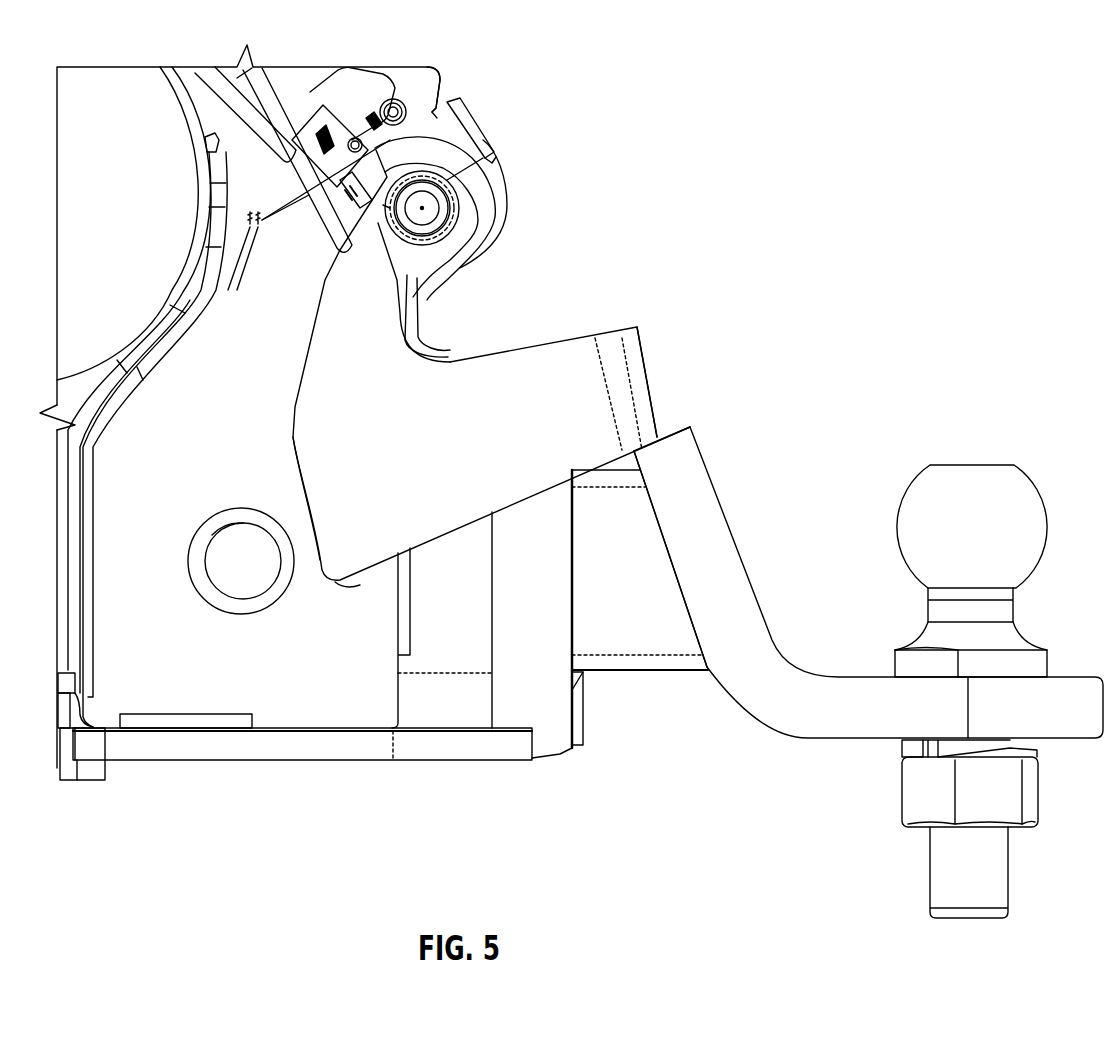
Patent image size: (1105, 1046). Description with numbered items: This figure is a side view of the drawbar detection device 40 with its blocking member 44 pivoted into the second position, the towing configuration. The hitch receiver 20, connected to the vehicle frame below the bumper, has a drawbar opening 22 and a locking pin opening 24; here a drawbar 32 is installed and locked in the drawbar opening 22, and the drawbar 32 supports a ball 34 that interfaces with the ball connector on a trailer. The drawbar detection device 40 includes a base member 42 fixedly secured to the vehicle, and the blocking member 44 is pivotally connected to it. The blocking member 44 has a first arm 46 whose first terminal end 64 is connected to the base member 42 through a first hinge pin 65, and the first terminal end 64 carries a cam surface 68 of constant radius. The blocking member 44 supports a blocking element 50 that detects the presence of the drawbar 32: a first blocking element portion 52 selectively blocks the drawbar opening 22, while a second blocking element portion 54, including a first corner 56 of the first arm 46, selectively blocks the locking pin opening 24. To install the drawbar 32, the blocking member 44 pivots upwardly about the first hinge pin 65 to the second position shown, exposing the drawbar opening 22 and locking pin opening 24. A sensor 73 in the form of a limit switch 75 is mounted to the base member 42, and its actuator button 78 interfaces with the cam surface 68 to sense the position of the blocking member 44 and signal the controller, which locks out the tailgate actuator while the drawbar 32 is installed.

The hitch receiver 20 is at (570, 760).
The drawbar opening 22 is at (574, 584).
The locking pin opening 24 is at (207, 557).
The drawbar 32 is at (733, 672).
The ball 34 is at (965, 490).
The drawbar detection device 40 is at (625, 296).
The base member 42 is at (472, 128).
The blocking member 44 is at (636, 338).
The first arm 46 is at (295, 404).
The blocking element 50 is at (656, 446).
The first blocking element portion 52 is at (651, 372).
The second blocking element portion 54 is at (297, 495).
The first corner 56 is at (337, 540).
The first terminal end 64 is at (470, 183).
The first hinge pin 65 is at (422, 208).
The cam surface 68 is at (417, 140).
The sensor 73 is at (313, 138).
The limit switch 75 is at (333, 228).
The actuator button 78 is at (362, 207).